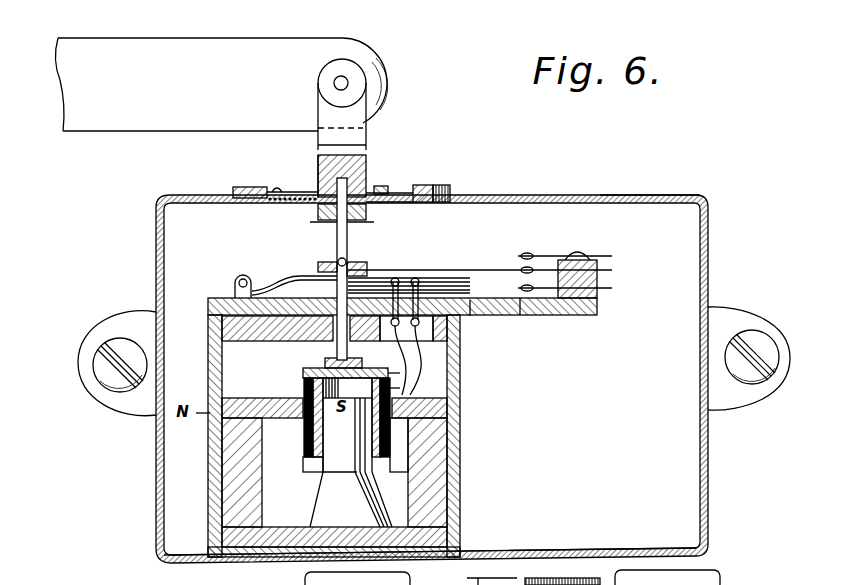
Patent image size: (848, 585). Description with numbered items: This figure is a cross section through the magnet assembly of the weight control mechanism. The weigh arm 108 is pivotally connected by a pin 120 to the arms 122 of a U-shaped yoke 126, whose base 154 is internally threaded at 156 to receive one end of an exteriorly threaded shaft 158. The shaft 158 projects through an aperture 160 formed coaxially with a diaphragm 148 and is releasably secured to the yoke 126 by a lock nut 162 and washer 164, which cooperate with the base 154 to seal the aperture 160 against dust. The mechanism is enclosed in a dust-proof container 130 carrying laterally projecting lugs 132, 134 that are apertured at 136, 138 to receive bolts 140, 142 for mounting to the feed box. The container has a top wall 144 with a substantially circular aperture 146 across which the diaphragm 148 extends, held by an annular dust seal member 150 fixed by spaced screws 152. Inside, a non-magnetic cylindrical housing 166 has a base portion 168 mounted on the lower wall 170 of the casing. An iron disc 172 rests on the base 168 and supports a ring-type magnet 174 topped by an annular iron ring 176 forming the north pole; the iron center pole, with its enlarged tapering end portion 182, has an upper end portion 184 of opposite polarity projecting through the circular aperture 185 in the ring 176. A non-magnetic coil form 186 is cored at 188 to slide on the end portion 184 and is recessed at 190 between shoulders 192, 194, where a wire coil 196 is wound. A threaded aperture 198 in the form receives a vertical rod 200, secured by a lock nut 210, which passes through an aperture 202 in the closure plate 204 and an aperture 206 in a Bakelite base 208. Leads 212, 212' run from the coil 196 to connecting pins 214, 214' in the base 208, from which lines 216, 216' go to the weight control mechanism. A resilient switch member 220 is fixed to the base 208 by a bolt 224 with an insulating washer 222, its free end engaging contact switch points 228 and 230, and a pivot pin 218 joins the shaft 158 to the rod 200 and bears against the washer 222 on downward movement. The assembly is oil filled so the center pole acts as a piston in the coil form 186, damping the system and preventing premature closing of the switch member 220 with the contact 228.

The weigh arm 108 is at (216, 48).
The pin 120 is at (348, 84).
The arms 122 is at (366, 128).
The U-shaped yoke 126 is at (345, 112).
The dust-proof container 130 is at (702, 490).
The lug 132 is at (740, 400).
The lug 134 is at (130, 412).
The aperture 136 is at (762, 335).
The aperture 138 is at (121, 338).
The bolt 140 is at (742, 340).
The bolt 142 is at (110, 372).
The top wall 144 is at (648, 196).
The aperture 146 is at (270, 200).
The diaphragm 148 is at (388, 194).
The annular dust seal member 150 is at (451, 196).
The screws 152 is at (428, 188).
The base of the yoke 154 is at (367, 165).
The internal thread 156 is at (318, 182).
The threaded shaft 158 is at (336, 220).
The aperture 160 is at (300, 205).
The lock nut 162 is at (367, 222).
The washer 164 is at (367, 209).
The non-magnetic cylindrical housing 166 is at (462, 502).
The base portion 168 is at (252, 561).
The lower wall 170 is at (450, 553).
The iron disc 172 is at (284, 526).
The ring-type magnet 174 is at (430, 474).
The annular iron ring 176 is at (462, 407).
The enlarged tapering end portion 182 is at (326, 527).
The upper end portion 184 is at (347, 435).
The circular aperture 185 is at (300, 402).
The coil form 186 is at (398, 448).
The core 188 is at (462, 388).
The recessed portion 190 is at (306, 425).
The shoulder 192 is at (462, 372).
The shoulder 194 is at (312, 459).
The wire coil 196 is at (306, 440).
The threaded aperture 198 is at (323, 386).
The rod 200 is at (294, 287).
The aperture 202 is at (462, 342).
The closure plate 204 is at (326, 362).
The aperture 206 is at (407, 279).
The Bakelite base 208 is at (600, 298).
The lock nut 210 is at (305, 373).
The lead 212 is at (484, 360).
The lead 212' is at (493, 360).
The connecting pin 214 is at (411, 269).
The connecting pin 214' is at (409, 262).
The line 216 is at (480, 266).
The line 216' is at (490, 315).
The pivot pin 218 is at (352, 262).
The resilient switch member 220 is at (374, 284).
The insulating washer 222 is at (328, 272).
The bolt 224 is at (233, 279).
The contact switch point 228 is at (538, 256).
The contact switch point 230 is at (520, 308).